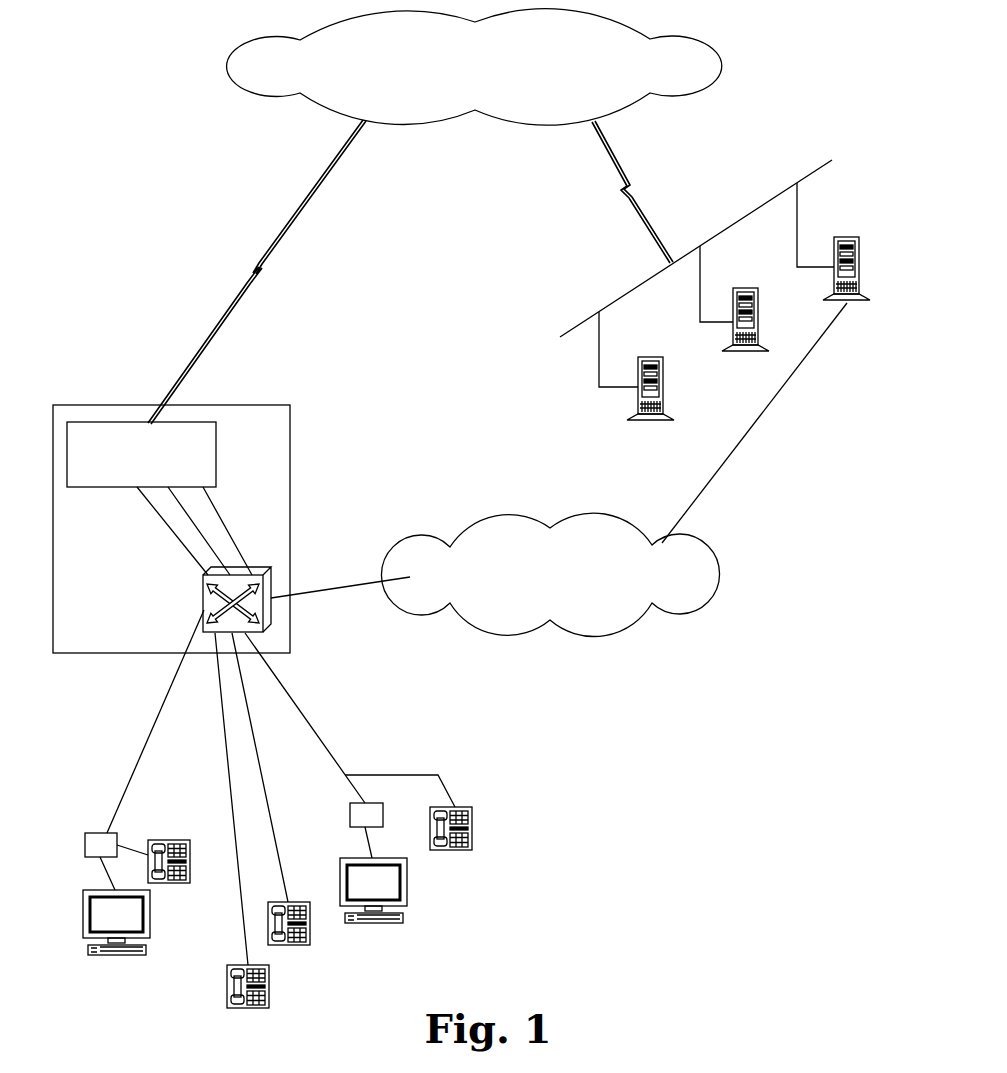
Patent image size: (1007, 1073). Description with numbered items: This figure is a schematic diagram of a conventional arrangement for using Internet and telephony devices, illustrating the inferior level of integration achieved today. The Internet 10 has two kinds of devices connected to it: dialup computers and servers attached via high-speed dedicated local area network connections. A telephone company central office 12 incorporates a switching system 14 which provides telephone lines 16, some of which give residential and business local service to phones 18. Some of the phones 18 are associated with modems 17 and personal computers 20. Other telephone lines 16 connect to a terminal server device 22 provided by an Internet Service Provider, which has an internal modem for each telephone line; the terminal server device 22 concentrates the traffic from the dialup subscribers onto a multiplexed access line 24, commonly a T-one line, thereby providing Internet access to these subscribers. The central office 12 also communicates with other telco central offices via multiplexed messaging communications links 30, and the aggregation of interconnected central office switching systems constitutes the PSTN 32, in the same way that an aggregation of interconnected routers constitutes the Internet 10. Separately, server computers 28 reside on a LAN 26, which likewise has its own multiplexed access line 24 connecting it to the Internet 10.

The Internet 10 is at (664, 23).
The telephone company central office 12 is at (258, 398).
The switching system 14 is at (267, 635).
The telephone lines 16 is at (225, 507).
The modems 17 is at (87, 827).
The phones 18 is at (168, 835).
The personal computers 20 is at (102, 962).
The terminal server device 22 is at (116, 422).
The multiplexed access line 24 is at (322, 190).
The LAN 26 is at (753, 202).
The server computers 28 is at (862, 233).
The multiplexed messaging communications links 30 is at (330, 597).
The PSTN 32 is at (498, 637).